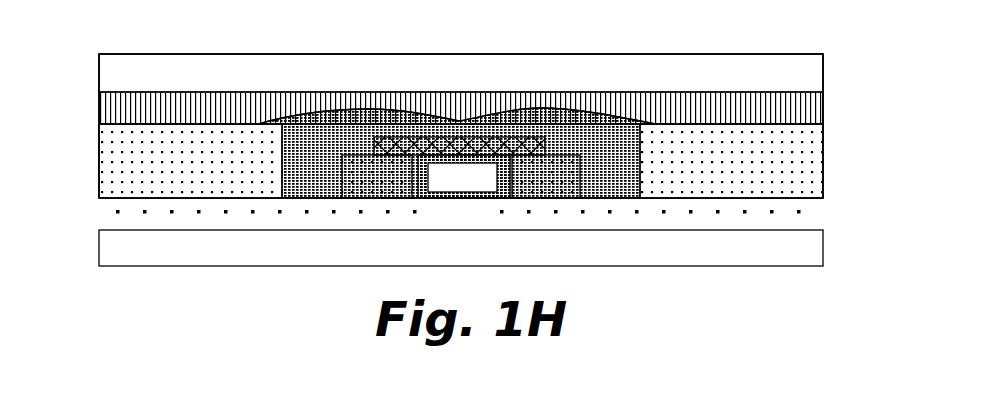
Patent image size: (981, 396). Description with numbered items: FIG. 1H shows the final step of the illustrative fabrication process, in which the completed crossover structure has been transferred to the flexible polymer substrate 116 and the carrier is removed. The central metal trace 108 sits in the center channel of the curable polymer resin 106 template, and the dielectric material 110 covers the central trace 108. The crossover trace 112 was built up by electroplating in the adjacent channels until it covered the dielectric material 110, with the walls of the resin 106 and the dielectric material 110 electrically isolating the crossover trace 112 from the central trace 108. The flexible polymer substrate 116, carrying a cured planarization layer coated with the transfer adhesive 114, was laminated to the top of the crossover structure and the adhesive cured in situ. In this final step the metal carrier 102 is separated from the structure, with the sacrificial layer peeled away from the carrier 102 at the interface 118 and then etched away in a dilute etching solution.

The carrier substrate 102 is at (480, 260).
The curable polymer resin 106 is at (208, 172).
The central metal trace 108 is at (482, 188).
The dielectric material 110 is at (459, 122).
The crossover trace 112 is at (345, 146).
The transfer adhesive 114 is at (192, 118).
The flexible polymer substrate 116 is at (593, 84).
The interface 118 is at (480, 222).